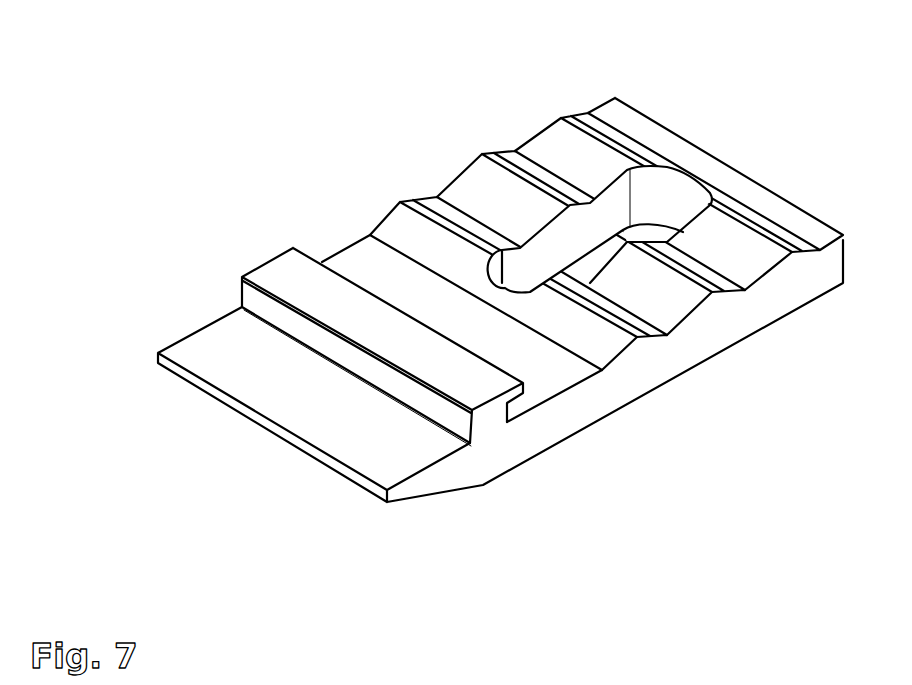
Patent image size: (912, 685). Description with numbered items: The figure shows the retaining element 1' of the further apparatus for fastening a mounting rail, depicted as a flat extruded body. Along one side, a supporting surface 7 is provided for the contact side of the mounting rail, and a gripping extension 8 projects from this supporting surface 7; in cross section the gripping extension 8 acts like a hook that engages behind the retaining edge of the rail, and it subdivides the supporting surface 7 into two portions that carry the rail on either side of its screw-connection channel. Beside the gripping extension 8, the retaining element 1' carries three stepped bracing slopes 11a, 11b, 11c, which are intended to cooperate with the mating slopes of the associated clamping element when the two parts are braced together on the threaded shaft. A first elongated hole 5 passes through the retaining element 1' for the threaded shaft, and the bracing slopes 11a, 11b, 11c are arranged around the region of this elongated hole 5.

The retaining element 1' is at (500, 276).
The first elongated hole 5 is at (668, 166).
The supporting surface 7 is at (214, 337).
The gripping extension 8 is at (283, 262).
The bracing slope 11a is at (398, 230).
The bracing slope 11b is at (475, 182).
The bracing slope 11c is at (552, 140).